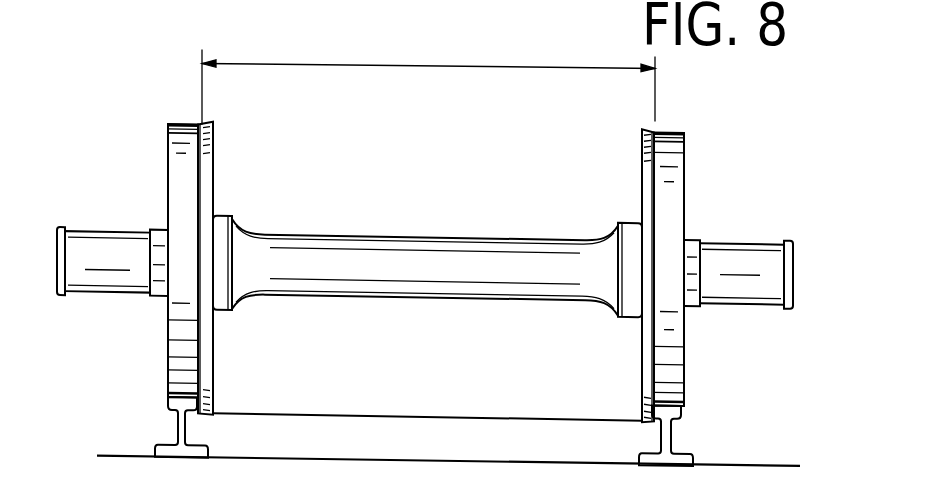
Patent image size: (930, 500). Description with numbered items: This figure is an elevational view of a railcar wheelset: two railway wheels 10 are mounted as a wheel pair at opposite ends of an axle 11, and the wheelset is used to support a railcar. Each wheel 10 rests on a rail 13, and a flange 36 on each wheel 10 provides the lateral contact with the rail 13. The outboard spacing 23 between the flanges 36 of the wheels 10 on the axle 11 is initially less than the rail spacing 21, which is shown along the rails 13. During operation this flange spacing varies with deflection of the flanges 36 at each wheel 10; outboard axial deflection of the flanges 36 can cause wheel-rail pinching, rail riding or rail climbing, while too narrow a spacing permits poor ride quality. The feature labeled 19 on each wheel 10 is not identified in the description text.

The railway wheel 10 is at (213, 368).
The axle 11 is at (440, 291).
The rail 13 is at (185, 426).
The wheel tread 19 is at (181, 121).
The rail spacing 21 is at (436, 409).
The outboard spacing 23 is at (443, 60).
The flange 36 is at (206, 118).